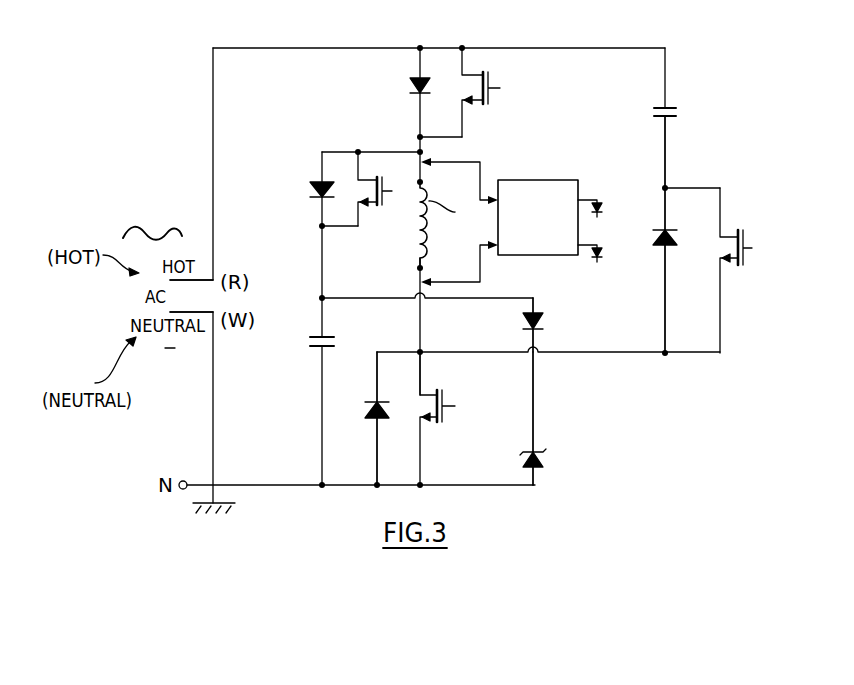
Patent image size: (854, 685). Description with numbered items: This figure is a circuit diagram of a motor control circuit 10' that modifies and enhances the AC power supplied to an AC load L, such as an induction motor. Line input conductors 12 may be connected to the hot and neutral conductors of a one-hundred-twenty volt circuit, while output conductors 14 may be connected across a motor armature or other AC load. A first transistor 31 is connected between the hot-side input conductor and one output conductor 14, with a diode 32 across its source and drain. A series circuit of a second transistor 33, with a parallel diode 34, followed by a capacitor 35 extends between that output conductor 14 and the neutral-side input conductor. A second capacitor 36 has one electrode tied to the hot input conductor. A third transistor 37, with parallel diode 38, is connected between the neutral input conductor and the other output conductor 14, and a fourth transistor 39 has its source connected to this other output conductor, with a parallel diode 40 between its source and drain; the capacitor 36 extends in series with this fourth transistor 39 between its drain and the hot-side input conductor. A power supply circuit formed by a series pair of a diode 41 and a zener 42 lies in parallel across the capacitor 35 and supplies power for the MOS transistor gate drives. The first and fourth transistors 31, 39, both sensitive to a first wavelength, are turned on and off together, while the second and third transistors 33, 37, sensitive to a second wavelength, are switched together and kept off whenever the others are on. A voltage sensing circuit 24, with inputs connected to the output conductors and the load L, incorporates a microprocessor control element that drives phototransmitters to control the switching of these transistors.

The motor control circuit 10' is at (348, 29).
The line input conductors 12 is at (208, 266).
The output conductors 14 is at (424, 183).
The voltage sensing circuit 24 is at (548, 180).
The first transistor 31 is at (495, 98).
The diode 32 is at (412, 89).
The second transistor 33 is at (362, 192).
The diode 34 is at (318, 181).
The capacitor 35 is at (312, 332).
The second capacitor 36 is at (688, 94).
The third transistor 37 is at (452, 418).
The diode 38 is at (380, 402).
The fourth transistor 39 is at (736, 230).
The diode 40 is at (669, 247).
The diode 41 is at (545, 321).
The zener 42 is at (540, 452).